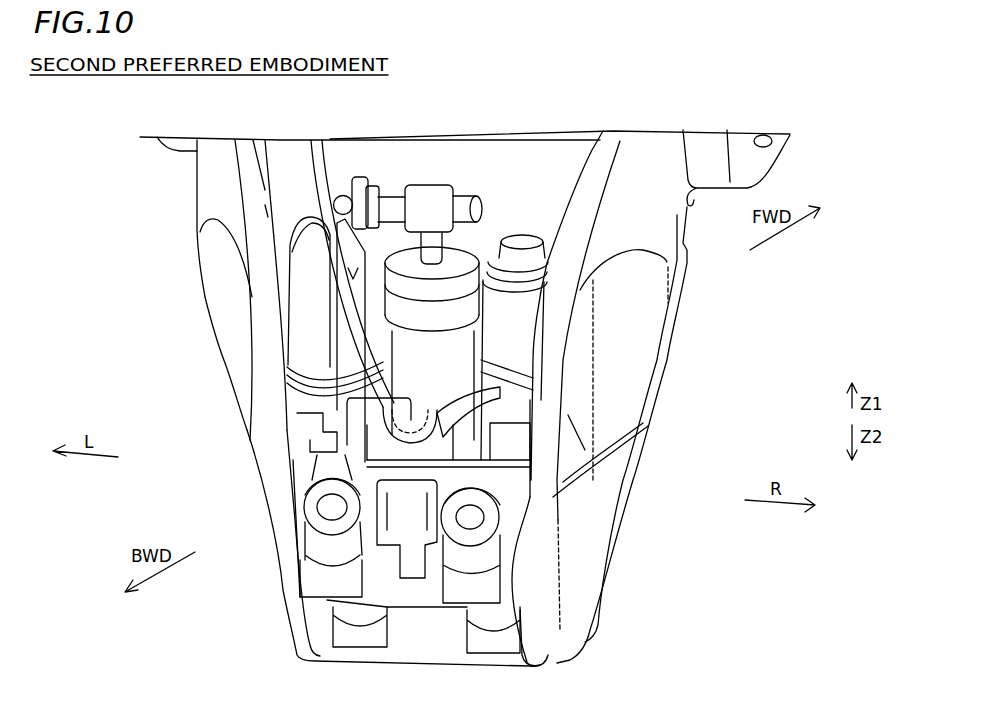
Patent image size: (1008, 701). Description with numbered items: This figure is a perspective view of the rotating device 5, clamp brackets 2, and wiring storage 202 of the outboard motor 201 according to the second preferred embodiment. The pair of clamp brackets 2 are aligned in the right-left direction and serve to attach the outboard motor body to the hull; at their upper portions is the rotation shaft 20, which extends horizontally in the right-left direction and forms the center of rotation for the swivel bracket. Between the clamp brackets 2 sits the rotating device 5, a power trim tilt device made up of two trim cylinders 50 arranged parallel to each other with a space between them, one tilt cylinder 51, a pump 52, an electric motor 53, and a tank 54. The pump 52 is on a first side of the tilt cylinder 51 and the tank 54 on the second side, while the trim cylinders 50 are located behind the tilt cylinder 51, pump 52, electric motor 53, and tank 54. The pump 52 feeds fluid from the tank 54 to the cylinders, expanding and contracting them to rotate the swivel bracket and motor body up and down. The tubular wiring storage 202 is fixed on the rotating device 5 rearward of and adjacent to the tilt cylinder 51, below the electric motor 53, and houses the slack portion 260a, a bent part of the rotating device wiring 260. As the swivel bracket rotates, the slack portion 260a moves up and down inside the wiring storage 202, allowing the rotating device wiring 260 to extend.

The outboard motor 201 is at (107, 128).
The rotation shaft 20 is at (176, 150).
The rotating device 5 is at (296, 199).
The rotating device wiring 260 is at (315, 140).
The tilt cylinder 51 is at (405, 267).
The tank 54 is at (300, 327).
The electric motor 53 is at (527, 327).
The wiring storage 202 is at (350, 408).
The slack portion 260a is at (414, 452).
The pump 52 is at (530, 422).
The trim cylinders 50 is at (310, 500).
The clamp brackets 2 is at (297, 622).